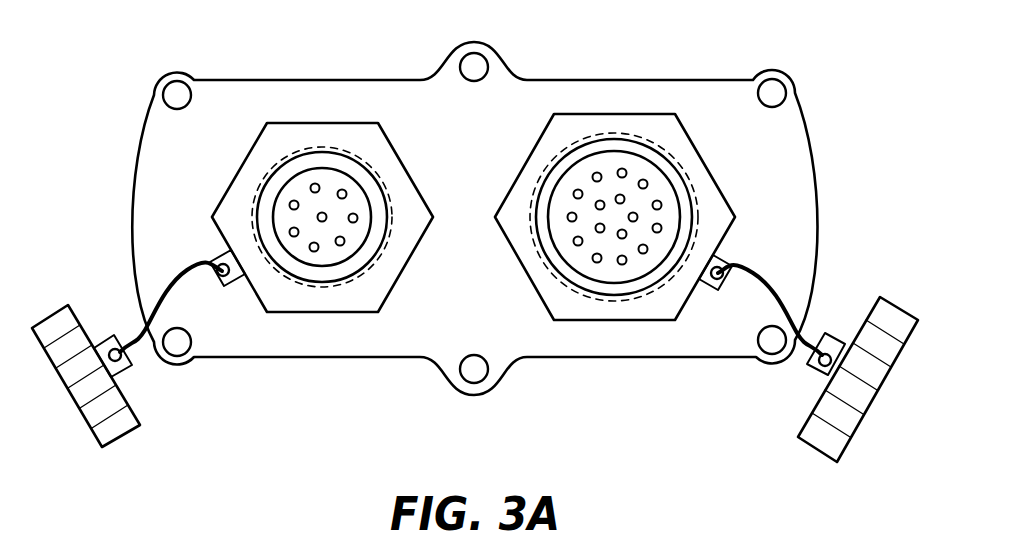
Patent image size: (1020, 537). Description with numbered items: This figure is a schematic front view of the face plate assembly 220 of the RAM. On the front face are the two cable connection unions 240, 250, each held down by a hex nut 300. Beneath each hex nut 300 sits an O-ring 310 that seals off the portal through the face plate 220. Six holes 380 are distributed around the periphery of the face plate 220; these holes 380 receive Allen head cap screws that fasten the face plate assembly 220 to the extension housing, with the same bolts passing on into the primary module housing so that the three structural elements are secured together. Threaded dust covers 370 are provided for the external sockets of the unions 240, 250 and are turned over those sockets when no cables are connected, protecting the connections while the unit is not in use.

The face plate assembly 220 is at (483, 316).
The cable connection union 240 is at (323, 166).
The cable connection union 250 is at (612, 152).
The hex nut 300 is at (717, 223).
The O-ring 310 is at (264, 173).
The threaded dust cover 370 is at (815, 452).
The hole 380 is at (776, 93).